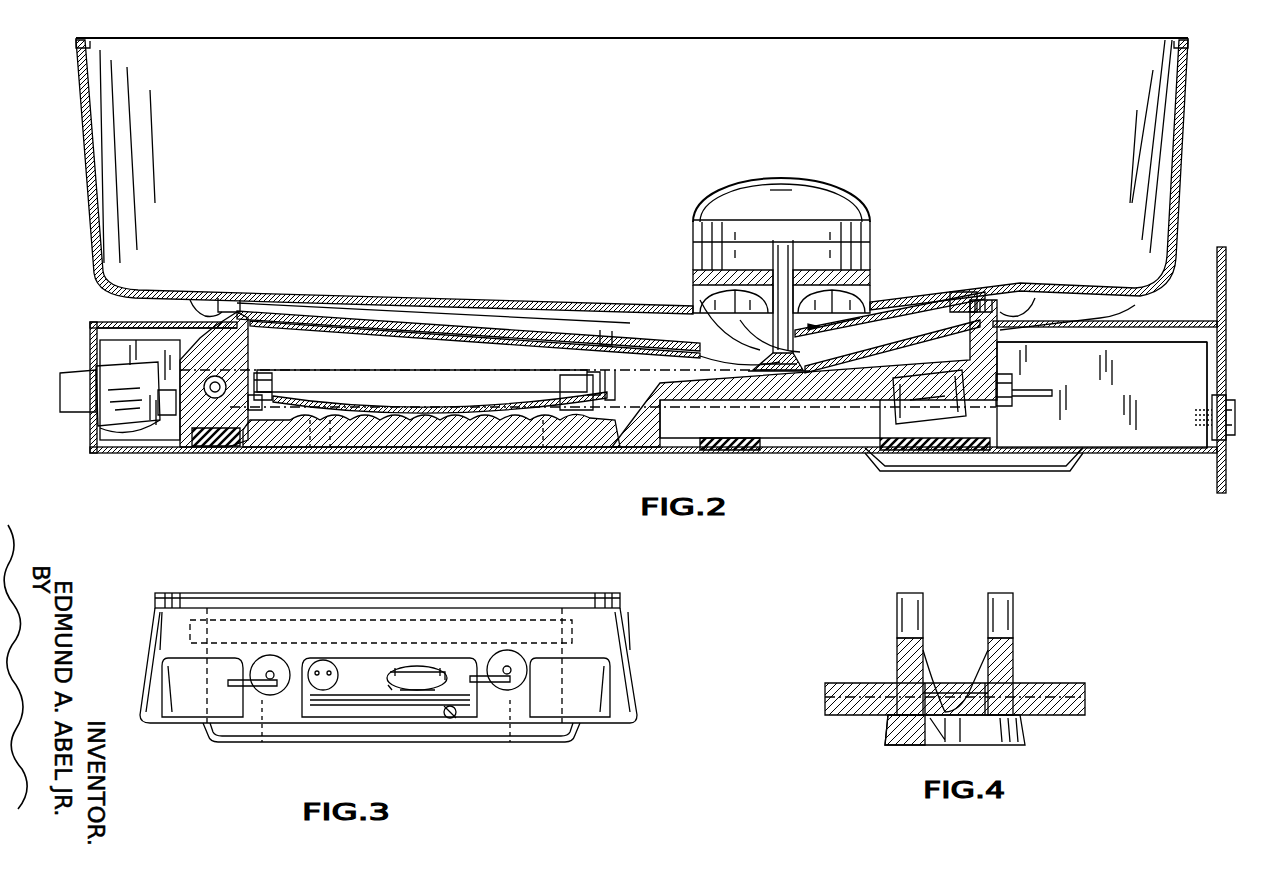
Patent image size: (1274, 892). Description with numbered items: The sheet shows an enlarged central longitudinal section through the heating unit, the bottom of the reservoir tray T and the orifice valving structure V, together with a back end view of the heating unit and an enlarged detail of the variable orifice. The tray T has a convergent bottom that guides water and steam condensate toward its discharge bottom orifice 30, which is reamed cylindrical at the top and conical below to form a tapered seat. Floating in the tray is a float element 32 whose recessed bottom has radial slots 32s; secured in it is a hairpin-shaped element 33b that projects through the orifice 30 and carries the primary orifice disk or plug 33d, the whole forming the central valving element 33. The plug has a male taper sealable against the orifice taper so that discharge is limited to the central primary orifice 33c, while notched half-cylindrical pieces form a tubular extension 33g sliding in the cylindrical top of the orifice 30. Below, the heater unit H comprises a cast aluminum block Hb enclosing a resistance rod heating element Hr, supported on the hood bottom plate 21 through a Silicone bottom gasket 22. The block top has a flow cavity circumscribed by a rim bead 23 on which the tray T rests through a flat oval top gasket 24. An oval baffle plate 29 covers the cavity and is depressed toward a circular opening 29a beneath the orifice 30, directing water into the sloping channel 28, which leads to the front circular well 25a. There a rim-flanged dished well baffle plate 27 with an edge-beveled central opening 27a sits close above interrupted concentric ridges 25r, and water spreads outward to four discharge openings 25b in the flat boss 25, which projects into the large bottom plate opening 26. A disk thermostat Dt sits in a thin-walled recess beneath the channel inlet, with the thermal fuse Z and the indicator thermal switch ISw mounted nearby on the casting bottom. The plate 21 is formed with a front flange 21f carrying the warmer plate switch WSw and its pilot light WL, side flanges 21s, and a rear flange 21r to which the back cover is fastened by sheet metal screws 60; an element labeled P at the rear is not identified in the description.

In FIG. 2, the reservoir tray T is at (84, 136).
In FIG. 4, the reservoir tray T is at (1080, 686).
In FIG. 2, the panel P is at (1222, 248).
In FIG. 2, the variable orifice valving structure V is at (776, 180).
In FIG. 2, the float element 32 is at (840, 202).
In FIG. 2, the radial slots 32s is at (690, 274).
In FIG. 2, the central valving element 33 is at (880, 310).
In FIG. 4, the central valving element 33 is at (938, 667).
In FIG. 2, the hairpin-shaped element 33b is at (787, 296).
In FIG. 4, the hairpin-shaped element 33b is at (1012, 622).
In FIG. 2, the notched tubular extension 33g is at (864, 344).
In FIG. 4, the notched tubular extension 33g is at (896, 658).
In FIG. 4, the central primary orifice 33c is at (934, 740).
In FIG. 4, the primary orifice disk or plug 33d is at (888, 730).
In FIG. 2, the discharge bottom orifice 30 is at (750, 354).
In FIG. 4, the discharge bottom orifice 30 is at (1018, 686).
In FIG. 2, the hood bottom plate 21 is at (141, 466).
In FIG. 2, the front flange 21f is at (94, 332).
In FIG. 2, the side flanges 21s is at (1134, 378).
In FIG. 2, the rear flange 21r is at (1200, 396).
In FIG. 2, the bottom gasket 22 is at (216, 440).
In FIG. 2, the rim bead 23 is at (202, 296).
In FIG. 3, the rim bead 23 is at (148, 600).
In FIG. 2, the top gasket 24 is at (222, 300).
In FIG. 2, the flat boss 25 is at (307, 440).
In FIG. 3, the flat boss 25 is at (358, 740).
In FIG. 2, the front circular well 25a is at (268, 376).
In FIG. 3, the front circular well 25a is at (196, 708).
In FIG. 2, the discharge openings 25b is at (328, 448).
In FIG. 3, the discharge openings 25b is at (262, 726).
In FIG. 2, the concentric ridges 25r is at (309, 440).
In FIG. 2, the bottom plate opening 26 is at (624, 452).
In FIG. 2, the well baffle plate 27 is at (328, 380).
In FIG. 2, the central opening 27a is at (412, 398).
In FIG. 2, the sloping channel 28 is at (606, 302).
In FIG. 3, the sloping channel 28 is at (258, 638).
In FIG. 2, the oval baffle plate 29 is at (396, 300).
In FIG. 2, the circular opening 29a is at (658, 306).
In FIG. 2, the sheet metal screws 60 is at (1228, 406).
In FIG. 2, the water heater unit H is at (1028, 358).
In FIG. 2, the heater block Hb is at (953, 300).
In FIG. 3, the heater block Hb is at (150, 644).
In FIG. 2, the heating element Hr is at (190, 428).
In FIG. 3, the heating element Hr is at (560, 658).
In FIG. 2, the warmer plate switch WSw is at (120, 380).
In FIG. 2, the warmer pilot light WL is at (118, 428).
In FIG. 2, the disk thermostat Dt is at (982, 398).
In FIG. 3, the disk thermostat Dt is at (418, 664).
In FIG. 3, the indicator thermal switch ISw is at (324, 664).
In FIG. 3, the thermal fuse Z is at (447, 724).